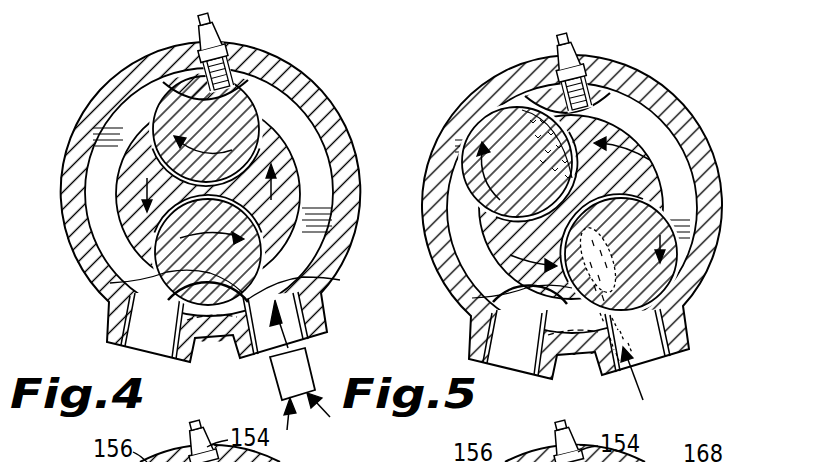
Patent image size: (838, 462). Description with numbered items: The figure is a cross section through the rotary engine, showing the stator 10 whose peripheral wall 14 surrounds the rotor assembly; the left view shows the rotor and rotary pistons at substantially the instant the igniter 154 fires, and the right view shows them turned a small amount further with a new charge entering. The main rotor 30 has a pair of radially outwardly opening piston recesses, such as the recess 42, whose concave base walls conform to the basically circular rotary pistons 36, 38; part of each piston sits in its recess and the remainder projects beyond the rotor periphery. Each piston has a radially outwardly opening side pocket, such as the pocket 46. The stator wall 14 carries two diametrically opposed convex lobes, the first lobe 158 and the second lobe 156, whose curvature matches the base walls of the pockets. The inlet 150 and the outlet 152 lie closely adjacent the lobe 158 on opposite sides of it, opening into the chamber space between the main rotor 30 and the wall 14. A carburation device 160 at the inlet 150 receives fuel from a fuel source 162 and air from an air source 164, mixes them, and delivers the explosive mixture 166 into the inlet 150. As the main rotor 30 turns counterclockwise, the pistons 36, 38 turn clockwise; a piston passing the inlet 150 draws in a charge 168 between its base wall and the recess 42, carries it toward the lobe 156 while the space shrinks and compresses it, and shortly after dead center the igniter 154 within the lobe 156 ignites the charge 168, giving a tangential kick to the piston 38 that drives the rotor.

In FIG. 4, the stator 10 is at (320, 73).
In FIG. 5, the stator 10 is at (572, 217).
In FIG. 4, the peripheral wall 14 is at (342, 118).
In FIG. 5, the peripheral wall 14 is at (572, 217).
In FIG. 4, the main rotor 30 is at (130, 165).
In FIG. 5, the main rotor 30 is at (643, 143).
In FIG. 4, the rotary piston 36 is at (247, 278).
In FIG. 5, the rotary piston 36 is at (517, 162).
In FIG. 4, the rotary piston 38 is at (165, 102).
In FIG. 5, the rotary piston 38 is at (497, 125).
In FIG. 5, the piston recess 42 is at (657, 210).
In FIG. 5, the side pocket 46 is at (603, 253).
In FIG. 4, the inlet 150 is at (290, 325).
In FIG. 5, the inlet 150 is at (650, 305).
In FIG. 4, the outlet 152 is at (137, 326).
In FIG. 5, the outlet 152 is at (510, 338).
In FIG. 4, the igniter 154 is at (217, 34).
In FIG. 5, the igniter 154 is at (560, 52).
In FIG. 4, the second lobe 156 is at (232, 98).
In FIG. 5, the second lobe 156 is at (610, 104).
In FIG. 4, the first lobe 158 is at (122, 283).
In FIG. 5, the first lobe 158 is at (535, 310).
In FIG. 4, the carburation device 160 is at (298, 364).
In FIG. 4, the fuel source 162 is at (290, 418).
In FIG. 4, the air source 164 is at (328, 412).
In FIG. 4, the explosive mixture 166 is at (264, 364).
In FIG. 5, the explosive mixture 166 is at (646, 382).
In FIG. 5, the charge 168 is at (578, 347).